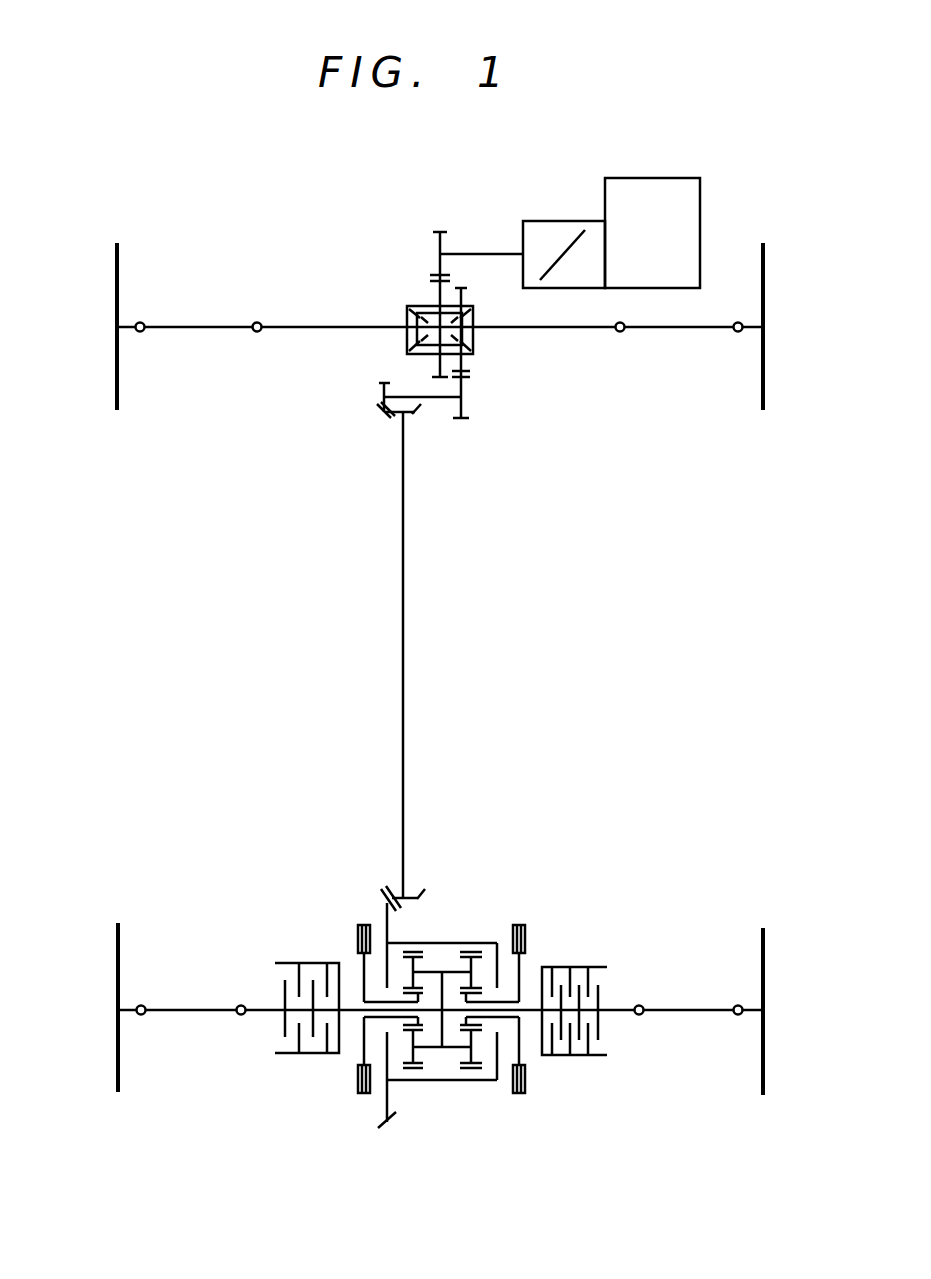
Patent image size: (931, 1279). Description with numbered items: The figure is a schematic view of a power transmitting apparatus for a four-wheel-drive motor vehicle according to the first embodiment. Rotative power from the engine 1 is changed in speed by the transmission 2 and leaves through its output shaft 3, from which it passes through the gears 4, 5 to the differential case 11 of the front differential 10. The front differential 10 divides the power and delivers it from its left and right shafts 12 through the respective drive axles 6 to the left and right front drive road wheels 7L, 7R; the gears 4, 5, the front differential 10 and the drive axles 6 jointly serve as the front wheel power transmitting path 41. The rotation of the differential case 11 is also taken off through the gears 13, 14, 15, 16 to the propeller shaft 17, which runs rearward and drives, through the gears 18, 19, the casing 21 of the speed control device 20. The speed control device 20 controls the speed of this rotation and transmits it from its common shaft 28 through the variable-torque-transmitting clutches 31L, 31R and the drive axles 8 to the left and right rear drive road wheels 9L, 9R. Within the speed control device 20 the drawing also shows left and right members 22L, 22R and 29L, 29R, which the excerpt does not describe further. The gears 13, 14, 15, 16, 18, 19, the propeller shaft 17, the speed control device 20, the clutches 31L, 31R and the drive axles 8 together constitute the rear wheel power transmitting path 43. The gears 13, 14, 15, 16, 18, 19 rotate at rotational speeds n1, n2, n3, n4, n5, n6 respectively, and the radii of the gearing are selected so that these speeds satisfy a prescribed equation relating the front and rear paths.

The engine 1 is at (658, 176).
The transmission 2 is at (558, 221).
The output shaft 3 is at (476, 254).
The gear 4 is at (437, 232).
The gear 5 is at (430, 275).
The drive axle 6 is at (192, 335).
The left front drive road wheel 7L is at (115, 287).
The right front drive road wheel 7R is at (765, 290).
The drive axle 8 is at (190, 1015).
The left rear drive road wheel 9L is at (118, 1058).
The right rear drive road wheel 9R is at (765, 1060).
The front differential 10 is at (441, 333).
The differential case 11 is at (473, 312).
The shaft 12 is at (292, 323).
The gear 13 is at (468, 292).
The gear 14 is at (468, 378).
The gear 15 is at (384, 383).
The gear 16 is at (388, 420).
The propeller shaft 17 is at (403, 681).
The gear 18 is at (408, 893).
The gear 19 is at (383, 893).
The speed control device 20 is at (440, 997).
The casing 21 is at (456, 1082).
The left planetary gear set 22L is at (440, 950).
The right planetary gear set 22R is at (486, 1052).
The common shaft 28 is at (440, 1015).
The left clutch 29L is at (355, 1085).
The right clutch 29R is at (525, 938).
The variable-torque-transmitting clutch 31L is at (284, 948).
The variable-torque-transmitting clutch 31R is at (591, 1070).
The front wheel power transmitting path 41 is at (401, 426).
The rear wheel power transmitting path 43 is at (428, 1008).
The rotational speed n1 is at (466, 362).
The rotational speed n2 is at (470, 418).
The rotational speed n3 is at (380, 414).
The rotational speed n4 is at (419, 414).
The rotational speed n5 is at (421, 897).
The rotational speed n6 is at (387, 916).